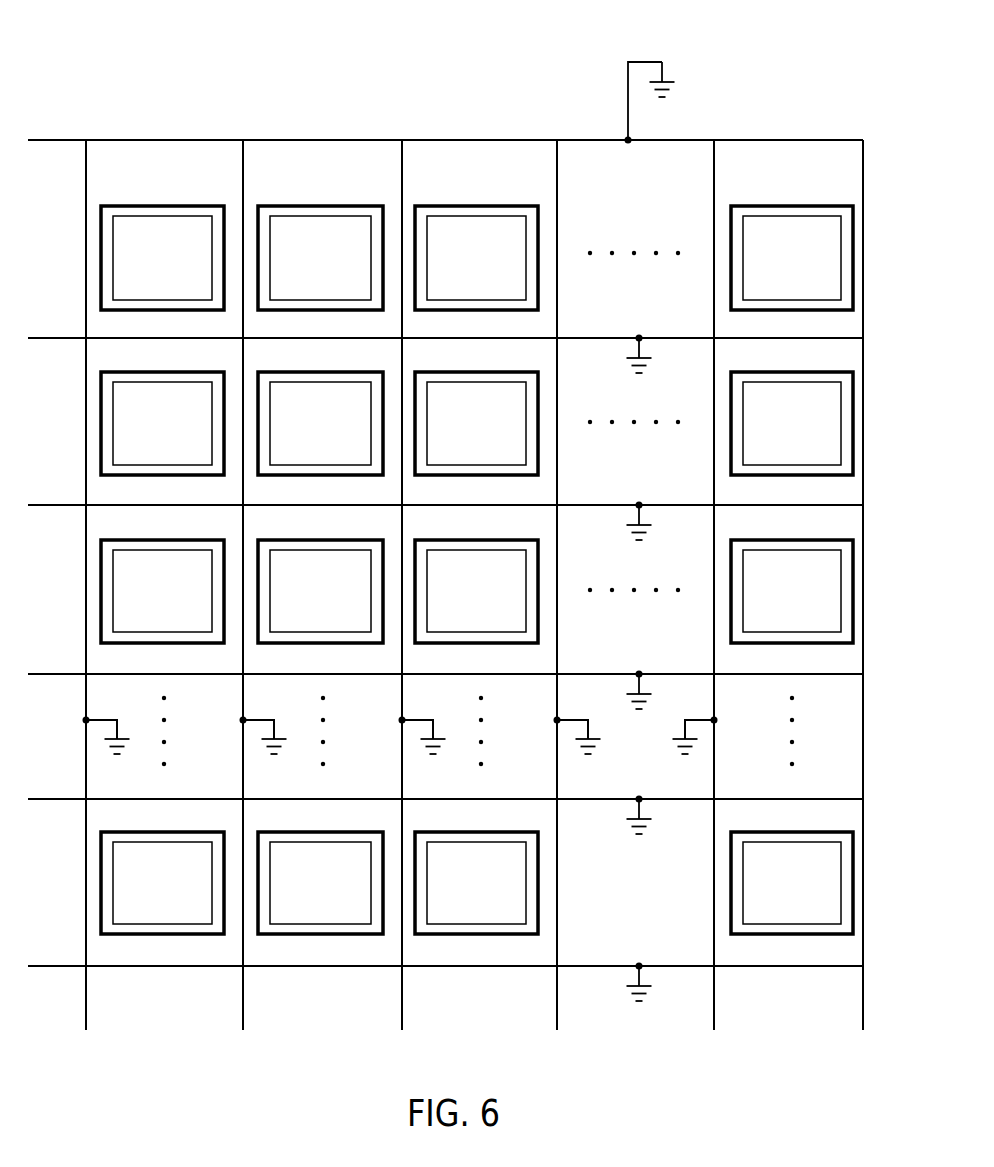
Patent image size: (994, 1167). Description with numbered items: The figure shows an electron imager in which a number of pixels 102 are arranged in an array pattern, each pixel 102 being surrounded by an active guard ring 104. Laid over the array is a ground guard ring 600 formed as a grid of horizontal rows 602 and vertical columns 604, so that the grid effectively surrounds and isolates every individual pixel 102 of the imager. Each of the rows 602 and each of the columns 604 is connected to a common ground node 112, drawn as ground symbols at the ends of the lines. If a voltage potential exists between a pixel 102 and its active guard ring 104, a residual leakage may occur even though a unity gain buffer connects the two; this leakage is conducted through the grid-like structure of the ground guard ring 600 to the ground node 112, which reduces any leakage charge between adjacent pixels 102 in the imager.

The ground guard ring 600 is at (248, 82).
The rows 602 is at (445, 538).
The columns 604 is at (468, 599).
The active guard ring 104 is at (182, 203).
The pixel 102 is at (157, 217).
The ground node 112 is at (680, 89).